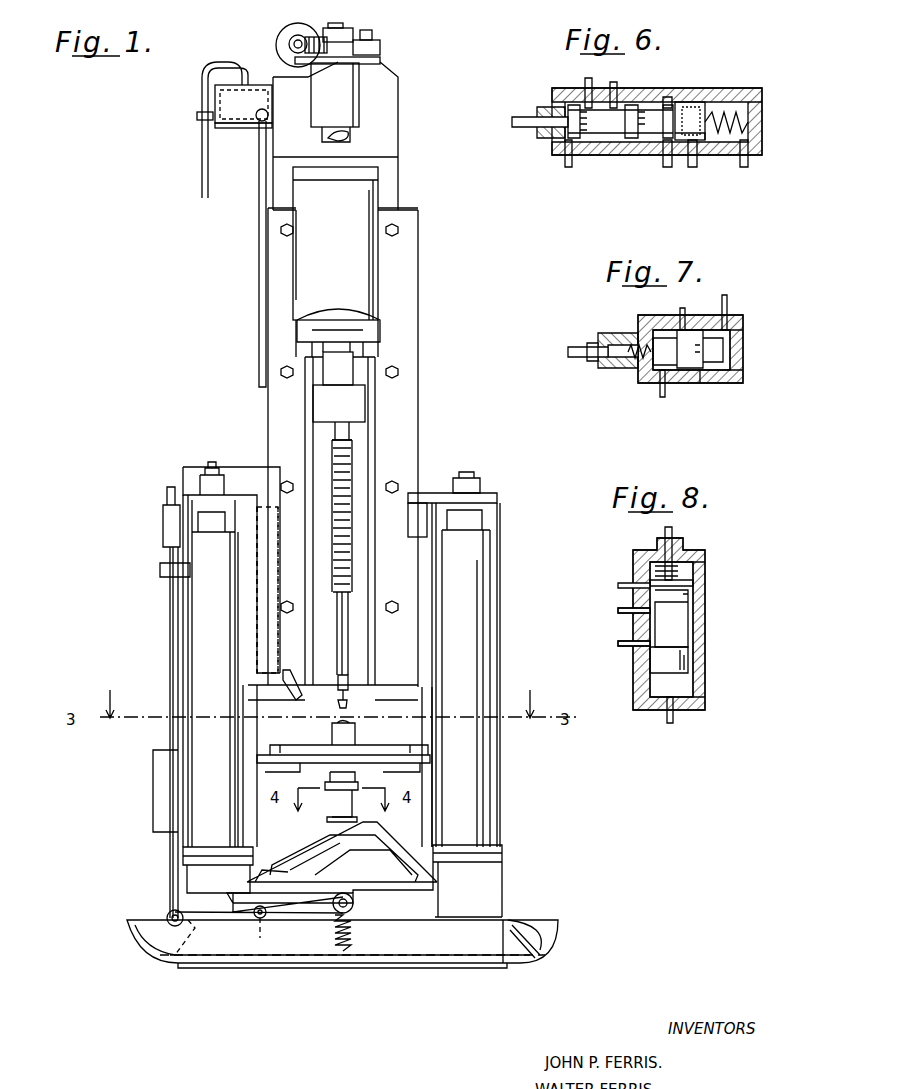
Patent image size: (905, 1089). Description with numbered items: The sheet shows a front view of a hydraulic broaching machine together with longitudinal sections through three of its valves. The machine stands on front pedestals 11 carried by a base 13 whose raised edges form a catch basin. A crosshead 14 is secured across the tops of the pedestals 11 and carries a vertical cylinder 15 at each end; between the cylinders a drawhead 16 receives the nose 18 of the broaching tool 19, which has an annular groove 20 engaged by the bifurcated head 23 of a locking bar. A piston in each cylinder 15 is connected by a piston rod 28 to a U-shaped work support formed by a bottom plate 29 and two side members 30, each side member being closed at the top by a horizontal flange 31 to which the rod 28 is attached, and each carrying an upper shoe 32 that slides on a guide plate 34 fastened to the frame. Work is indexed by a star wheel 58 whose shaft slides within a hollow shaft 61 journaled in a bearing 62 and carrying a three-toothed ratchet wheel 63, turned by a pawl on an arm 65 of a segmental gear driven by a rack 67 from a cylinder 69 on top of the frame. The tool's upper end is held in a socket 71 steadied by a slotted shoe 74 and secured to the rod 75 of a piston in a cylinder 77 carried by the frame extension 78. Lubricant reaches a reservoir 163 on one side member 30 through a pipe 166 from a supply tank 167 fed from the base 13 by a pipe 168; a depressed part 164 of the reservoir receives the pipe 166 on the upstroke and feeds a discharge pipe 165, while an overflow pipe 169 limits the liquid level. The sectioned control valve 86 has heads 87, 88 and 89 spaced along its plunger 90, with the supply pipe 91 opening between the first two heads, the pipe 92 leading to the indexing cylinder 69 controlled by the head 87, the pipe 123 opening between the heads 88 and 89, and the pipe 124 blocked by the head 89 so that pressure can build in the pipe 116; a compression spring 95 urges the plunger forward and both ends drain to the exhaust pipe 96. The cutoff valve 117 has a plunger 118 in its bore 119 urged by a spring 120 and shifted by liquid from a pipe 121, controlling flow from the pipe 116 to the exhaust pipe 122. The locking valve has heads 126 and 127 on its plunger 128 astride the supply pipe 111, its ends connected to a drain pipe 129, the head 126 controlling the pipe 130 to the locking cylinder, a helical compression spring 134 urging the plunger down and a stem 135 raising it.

In FIG. 1, the front pedestals 11 is at (200, 906).
In FIG. 1, the base 13 is at (543, 930).
In FIG. 1, the crosshead 14 is at (360, 855).
In FIG. 1, the vertical cylinder 15 is at (210, 622).
In FIG. 1, the drawhead 16 is at (338, 805).
In FIG. 1, the nose 18 is at (350, 700).
In FIG. 1, the broaching tool 19 is at (345, 478).
In FIG. 1, the annular groove 20 is at (350, 678).
In FIG. 1, the head 23 is at (350, 795).
In FIG. 1, the piston rod 28 is at (210, 468).
In FIG. 1, the bottom plate 29 is at (410, 745).
In FIG. 1, the side member 30 is at (262, 708).
In FIG. 1, the horizontal flange 31 is at (490, 498).
In FIG. 1, the upper shoe 32 is at (408, 512).
In FIG. 1, the guide plate 34 is at (272, 286).
In FIG. 1, the star wheel 58 is at (322, 742).
In FIG. 1, the hollow shaft 61 is at (350, 135).
In FIG. 1, the bearing 62 is at (335, 95).
In FIG. 1, the three-toothed ratchet wheel 63 is at (382, 60).
In FIG. 1, the arm 65 is at (378, 40).
In FIG. 1, the rack 67 is at (295, 43).
In FIG. 1, the cylinder 69 is at (318, 8).
In FIG. 1, the socket 71 is at (339, 403).
In FIG. 1, the slotted shoe 74 is at (368, 408).
In FIG. 1, the rod 75 is at (340, 348).
In FIG. 1, the cylinder 77 is at (338, 316).
In FIG. 1, the extension 78 is at (370, 243).
In FIG. 6, the valve 86 is at (747, 90).
In FIG. 6, the head 87 is at (555, 110).
In FIG. 6, the head 88 is at (640, 100).
In FIG. 6, the head 89 is at (700, 140).
In FIG. 6, the plunger 90 is at (600, 128).
In FIG. 6, the pipe 91 is at (617, 82).
In FIG. 6, the pipe 92 is at (580, 80).
In FIG. 6, the compression spring 95 is at (690, 105).
In FIG. 6, the exhaust pipe 96 is at (566, 165).
In FIG. 8, the supply pipe 111 is at (625, 648).
In FIG. 7, the pipe 116 is at (680, 310).
In FIG. 7, the cutoff valve 117 is at (740, 335).
In FIG. 7, the plunger 118 is at (705, 383).
In FIG. 7, the bore 119 is at (675, 380).
In FIG. 7, the spring 120 is at (628, 332).
In FIG. 7, the pipe 121 is at (728, 300).
In FIG. 7, the pipe 122 is at (660, 395).
In FIG. 6, the pipe 123 is at (664, 160).
In FIG. 6, the pipe 124 is at (689, 162).
In FIG. 8, the head 126 is at (688, 600).
In FIG. 8, the head 127 is at (685, 662).
In FIG. 8, the plunger 128 is at (675, 630).
In FIG. 8, the drain pipe 129 is at (640, 585).
In FIG. 8, the pipe 130 is at (620, 608).
In FIG. 8, the helical compression spring 134 is at (693, 572).
In FIG. 8, the stem 135 is at (672, 532).
In FIG. 1, the reservoir 163 is at (246, 480).
In FIG. 1, the depressed part 164 is at (265, 590).
In FIG. 1, the discharge pipe 165 is at (308, 650).
In FIG. 1, the pipe 166 is at (259, 225).
In FIG. 1, the supply tank 167 is at (234, 106).
In FIG. 1, the pipe 168 is at (202, 169).
In FIG. 1, the overflow pipe 169 is at (170, 490).